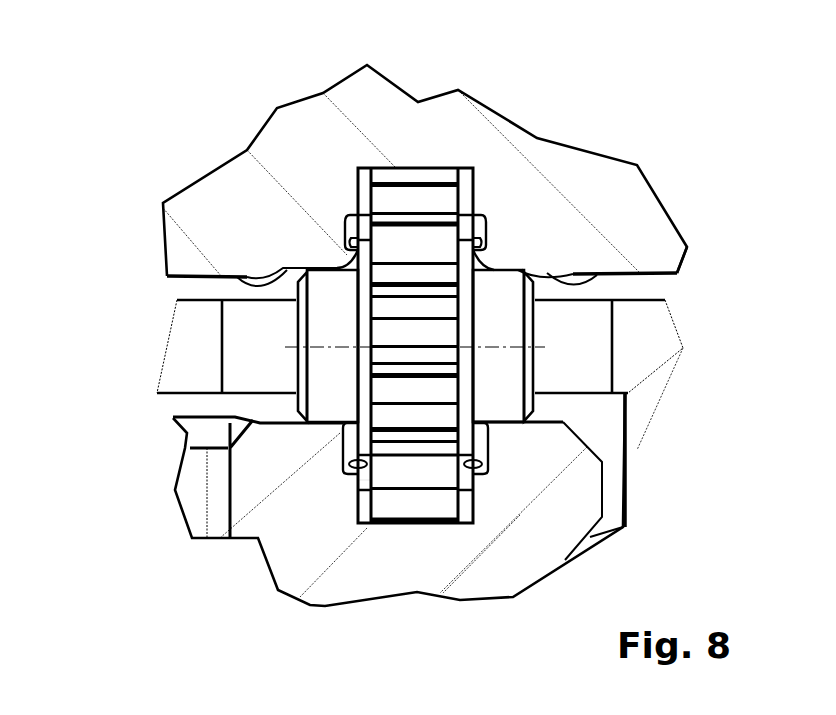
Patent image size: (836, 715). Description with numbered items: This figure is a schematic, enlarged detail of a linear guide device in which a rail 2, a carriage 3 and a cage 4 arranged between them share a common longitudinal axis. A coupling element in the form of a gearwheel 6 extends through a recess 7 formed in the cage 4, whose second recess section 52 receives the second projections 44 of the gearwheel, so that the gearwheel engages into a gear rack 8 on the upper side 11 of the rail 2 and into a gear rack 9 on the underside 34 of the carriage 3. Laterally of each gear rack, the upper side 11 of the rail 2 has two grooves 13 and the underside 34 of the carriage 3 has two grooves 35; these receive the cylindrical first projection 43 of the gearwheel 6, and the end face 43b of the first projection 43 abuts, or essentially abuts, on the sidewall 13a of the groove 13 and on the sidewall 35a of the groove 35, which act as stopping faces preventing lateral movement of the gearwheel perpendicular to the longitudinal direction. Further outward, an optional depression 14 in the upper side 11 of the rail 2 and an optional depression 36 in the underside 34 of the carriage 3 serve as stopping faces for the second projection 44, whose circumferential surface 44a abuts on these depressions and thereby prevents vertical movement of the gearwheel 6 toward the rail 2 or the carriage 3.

The rail 2 is at (435, 555).
The carriage 3 is at (268, 157).
The cage 4 is at (200, 320).
The gearwheel 6 is at (404, 200).
The recess 7 is at (130, 346).
The second recess section 52 is at (238, 348).
The gear rack 8 is at (367, 527).
The gear rack 9 is at (463, 183).
The upper side 11 is at (215, 418).
The groove 13 is at (357, 472).
The sidewall 13a is at (352, 466).
The depression 14 is at (547, 420).
The underside 34 is at (662, 275).
The groove 35 is at (350, 218).
The sidewall 35a is at (357, 243).
The depression 36 is at (240, 277).
The first projection 43 is at (347, 433).
The end face 43b is at (357, 307).
The second projection 44 is at (323, 310).
The circumferential surface 44a is at (483, 273).